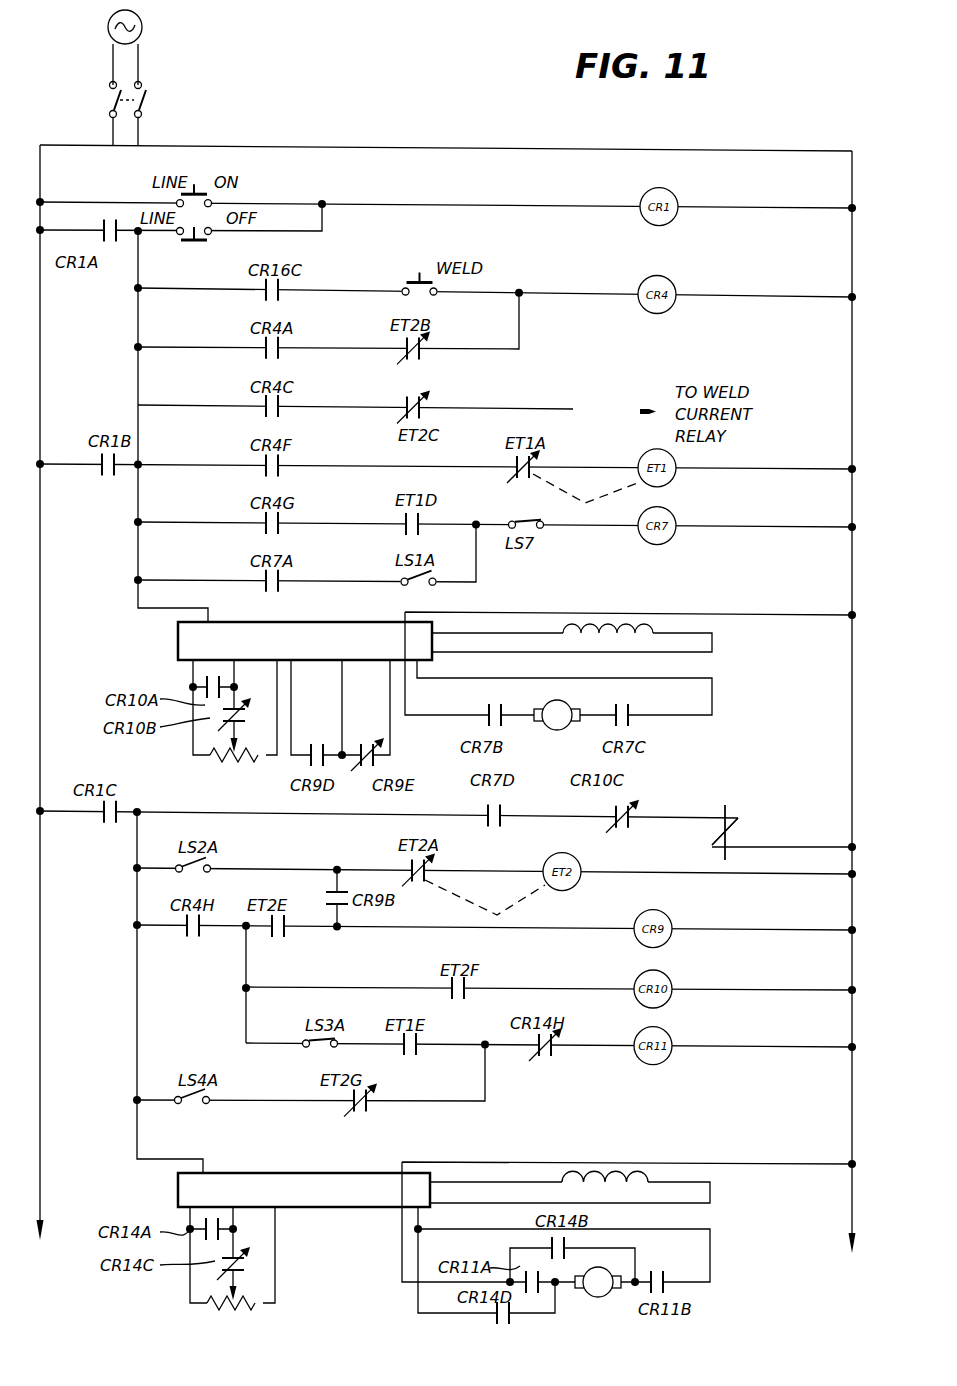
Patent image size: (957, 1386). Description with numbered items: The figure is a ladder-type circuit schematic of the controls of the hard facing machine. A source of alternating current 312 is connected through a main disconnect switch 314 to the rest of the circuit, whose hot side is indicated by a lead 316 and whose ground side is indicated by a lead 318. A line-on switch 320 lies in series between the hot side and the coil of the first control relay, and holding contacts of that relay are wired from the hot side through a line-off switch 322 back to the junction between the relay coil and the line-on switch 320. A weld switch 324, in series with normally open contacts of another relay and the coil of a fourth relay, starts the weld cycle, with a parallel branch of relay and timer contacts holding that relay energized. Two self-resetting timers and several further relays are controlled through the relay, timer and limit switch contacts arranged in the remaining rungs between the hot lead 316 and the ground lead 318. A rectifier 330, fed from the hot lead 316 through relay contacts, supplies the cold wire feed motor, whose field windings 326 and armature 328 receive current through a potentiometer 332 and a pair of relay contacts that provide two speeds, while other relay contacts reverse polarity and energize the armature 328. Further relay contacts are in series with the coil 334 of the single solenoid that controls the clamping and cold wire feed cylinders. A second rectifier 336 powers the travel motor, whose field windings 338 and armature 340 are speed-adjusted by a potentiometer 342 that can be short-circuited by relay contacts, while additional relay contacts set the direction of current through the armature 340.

The source of alternating current 312 is at (143, 30).
The main disconnect switch 314 is at (143, 104).
The hot lead 316 is at (40, 333).
The ground lead 318 is at (852, 166).
The line-on switch 320 is at (213, 197).
The line-off switch 322 is at (192, 240).
The weld switch 324 is at (418, 272).
The field windings of the cold wire feed motor 326 is at (600, 630).
The armature of the cold wire feed motor 328 is at (555, 731).
The rectifier 330 is at (178, 637).
The potentiometer 332 is at (208, 757).
The solenoid coil 334 is at (733, 814).
The rectifier 336 is at (293, 1173).
The field windings of the travel motor 338 is at (622, 1180).
The armature of the travel motor 340 is at (592, 1298).
The potentiometer 342 is at (210, 1306).